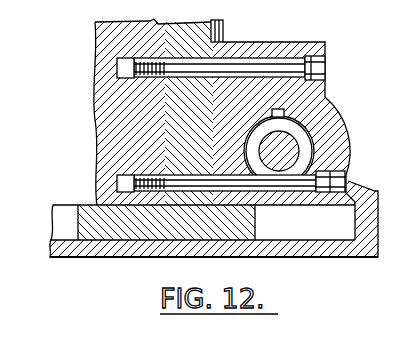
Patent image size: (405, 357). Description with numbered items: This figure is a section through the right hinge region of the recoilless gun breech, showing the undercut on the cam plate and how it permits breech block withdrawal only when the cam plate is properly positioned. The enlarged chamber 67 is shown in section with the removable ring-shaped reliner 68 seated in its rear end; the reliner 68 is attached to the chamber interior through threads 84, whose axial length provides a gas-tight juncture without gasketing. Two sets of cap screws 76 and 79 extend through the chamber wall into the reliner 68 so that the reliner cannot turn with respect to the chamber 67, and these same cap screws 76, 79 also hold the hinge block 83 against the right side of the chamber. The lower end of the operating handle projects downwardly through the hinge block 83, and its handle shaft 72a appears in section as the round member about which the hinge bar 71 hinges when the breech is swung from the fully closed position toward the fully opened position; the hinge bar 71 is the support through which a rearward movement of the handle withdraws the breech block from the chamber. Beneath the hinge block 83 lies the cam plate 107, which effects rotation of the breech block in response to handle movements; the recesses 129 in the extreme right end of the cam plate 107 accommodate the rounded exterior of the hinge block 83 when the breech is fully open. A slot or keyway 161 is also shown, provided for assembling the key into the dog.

The reliner 68 is at (104, 42).
The threads 84 is at (153, 6).
The chamber 67 is at (221, 32).
The hinge block 83 is at (291, 46).
The slot or keyway 161 is at (278, 110).
The handle shaft 72a is at (279, 152).
The cap screws 79 is at (119, 79).
The cap screws 76 is at (126, 177).
The recesses 129 is at (253, 207).
The cam plate 107 is at (84, 207).
The hinge bar 71 is at (62, 246).